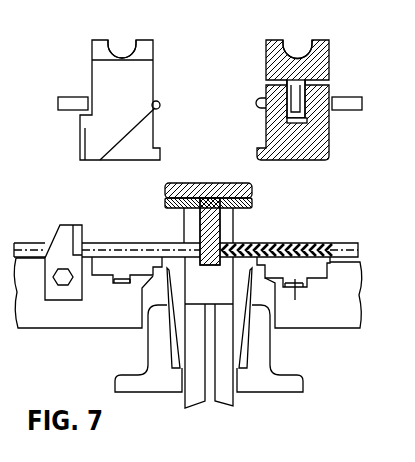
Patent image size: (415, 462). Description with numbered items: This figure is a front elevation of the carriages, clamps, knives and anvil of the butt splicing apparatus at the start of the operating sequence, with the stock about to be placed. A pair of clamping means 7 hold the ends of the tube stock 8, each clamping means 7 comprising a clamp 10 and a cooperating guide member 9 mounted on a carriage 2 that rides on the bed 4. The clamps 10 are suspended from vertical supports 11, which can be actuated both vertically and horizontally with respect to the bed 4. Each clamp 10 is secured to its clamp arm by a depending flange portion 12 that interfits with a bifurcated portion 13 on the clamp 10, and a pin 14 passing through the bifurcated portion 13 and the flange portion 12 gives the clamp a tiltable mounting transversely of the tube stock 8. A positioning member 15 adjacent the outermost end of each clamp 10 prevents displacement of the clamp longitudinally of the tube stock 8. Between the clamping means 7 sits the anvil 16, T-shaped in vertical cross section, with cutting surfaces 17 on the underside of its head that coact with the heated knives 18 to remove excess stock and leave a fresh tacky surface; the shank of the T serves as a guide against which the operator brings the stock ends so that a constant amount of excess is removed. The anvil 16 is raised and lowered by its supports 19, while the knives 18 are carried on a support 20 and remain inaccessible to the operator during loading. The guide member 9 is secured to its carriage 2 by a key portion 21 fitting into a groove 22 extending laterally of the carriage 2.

The carriage 2 is at (35, 320).
The bed 4 is at (235, 231).
The clamping means 7 is at (91, 77).
The tube stock 8 is at (30, 248).
The guide member 9 is at (117, 263).
The clamp 10 is at (126, 150).
The vertical supports 11 is at (100, 45).
The depending flange portion 12 is at (303, 82).
The bifurcated portion 13 is at (308, 122).
The pin 14 is at (62, 105).
The positioning member 15 is at (63, 233).
The anvil 16 is at (222, 180).
The cutting surfaces 17 is at (178, 208).
The knives 18 is at (174, 295).
The supports 19 is at (225, 393).
The support 20 is at (158, 353).
The key portion 21 is at (117, 283).
The groove 22 is at (123, 290).